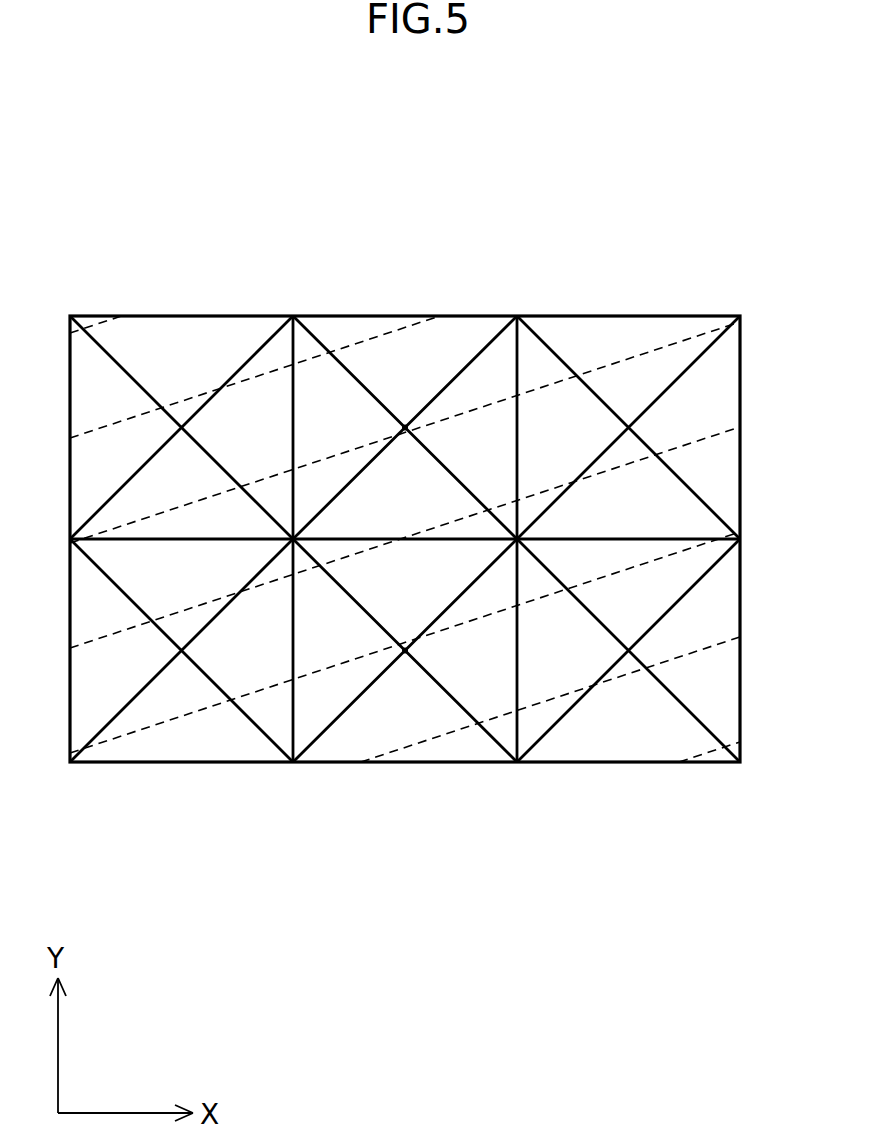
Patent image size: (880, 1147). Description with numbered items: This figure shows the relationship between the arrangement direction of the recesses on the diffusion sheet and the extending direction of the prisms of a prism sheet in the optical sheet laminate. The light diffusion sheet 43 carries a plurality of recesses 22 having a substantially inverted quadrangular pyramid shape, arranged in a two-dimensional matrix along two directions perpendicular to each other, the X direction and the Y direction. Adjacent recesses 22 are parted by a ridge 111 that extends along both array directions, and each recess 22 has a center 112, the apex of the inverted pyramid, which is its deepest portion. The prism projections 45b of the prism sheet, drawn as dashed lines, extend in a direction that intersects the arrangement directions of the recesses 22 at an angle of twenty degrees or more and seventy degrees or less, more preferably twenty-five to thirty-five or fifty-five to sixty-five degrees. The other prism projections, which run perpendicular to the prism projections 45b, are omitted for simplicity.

The light diffusion sheet 43 is at (713, 780).
The ridge 111 is at (330, 316).
The center of the recess 112 is at (405, 428).
The recess 22 is at (460, 340).
The prism projection 45b is at (675, 343).